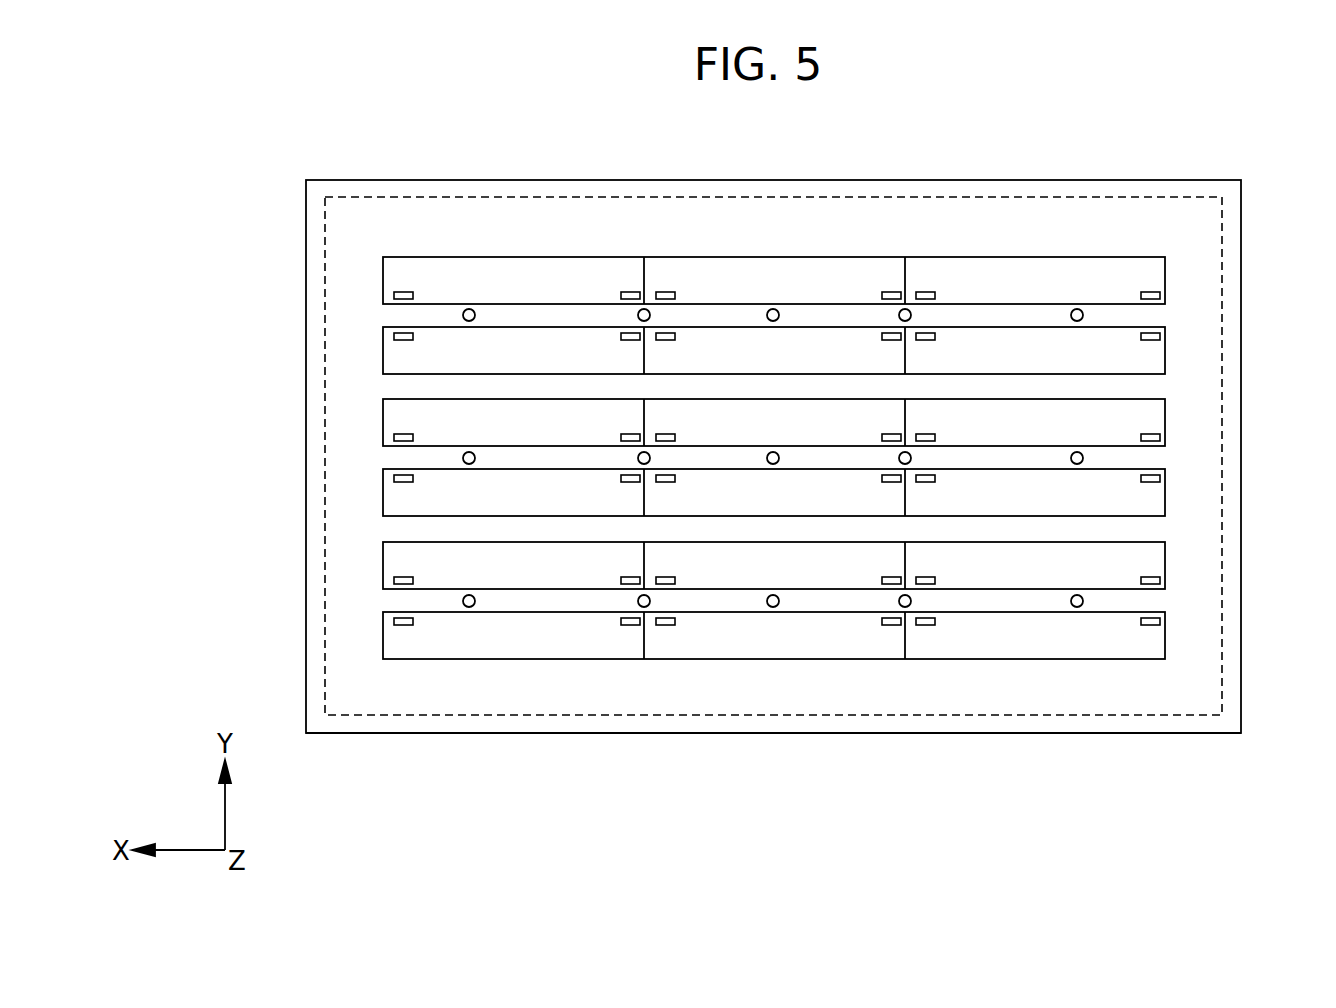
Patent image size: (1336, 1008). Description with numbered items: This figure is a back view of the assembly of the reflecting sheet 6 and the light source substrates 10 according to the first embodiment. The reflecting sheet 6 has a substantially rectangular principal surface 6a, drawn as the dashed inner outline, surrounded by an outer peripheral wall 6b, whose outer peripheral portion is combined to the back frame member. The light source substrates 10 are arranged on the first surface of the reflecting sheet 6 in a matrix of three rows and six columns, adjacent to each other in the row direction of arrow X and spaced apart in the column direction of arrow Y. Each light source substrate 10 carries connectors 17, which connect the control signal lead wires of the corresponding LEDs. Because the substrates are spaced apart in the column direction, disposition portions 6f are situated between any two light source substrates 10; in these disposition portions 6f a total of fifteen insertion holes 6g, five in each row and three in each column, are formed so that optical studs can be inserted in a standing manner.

The reflecting sheet 6 is at (306, 698).
The principal surface 6a is at (571, 706).
The outer peripheral wall 6b is at (367, 733).
The disposition portion 6f is at (1140, 317).
The insertion hole 6g is at (468, 309).
The light source substrate 10 is at (388, 282).
The connector 17 is at (401, 292).